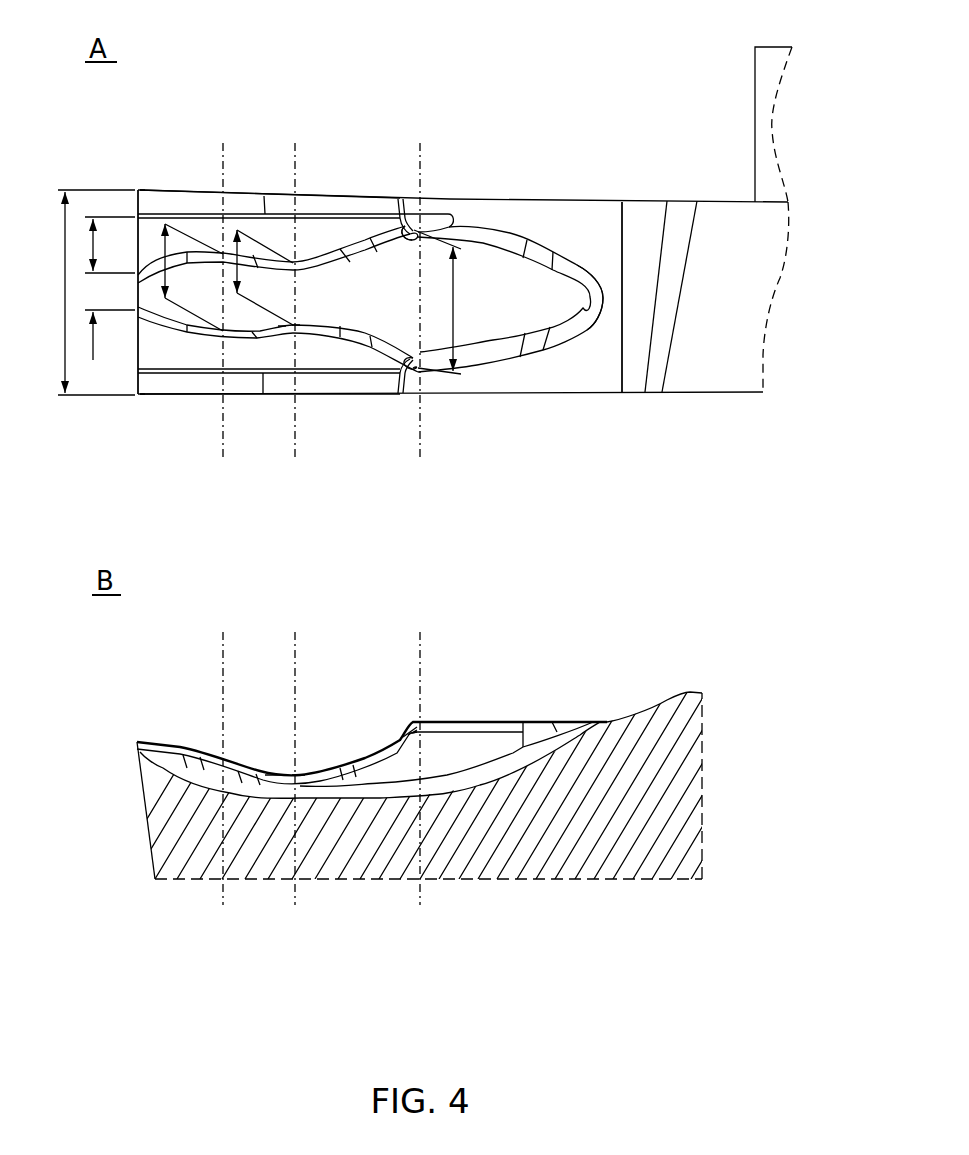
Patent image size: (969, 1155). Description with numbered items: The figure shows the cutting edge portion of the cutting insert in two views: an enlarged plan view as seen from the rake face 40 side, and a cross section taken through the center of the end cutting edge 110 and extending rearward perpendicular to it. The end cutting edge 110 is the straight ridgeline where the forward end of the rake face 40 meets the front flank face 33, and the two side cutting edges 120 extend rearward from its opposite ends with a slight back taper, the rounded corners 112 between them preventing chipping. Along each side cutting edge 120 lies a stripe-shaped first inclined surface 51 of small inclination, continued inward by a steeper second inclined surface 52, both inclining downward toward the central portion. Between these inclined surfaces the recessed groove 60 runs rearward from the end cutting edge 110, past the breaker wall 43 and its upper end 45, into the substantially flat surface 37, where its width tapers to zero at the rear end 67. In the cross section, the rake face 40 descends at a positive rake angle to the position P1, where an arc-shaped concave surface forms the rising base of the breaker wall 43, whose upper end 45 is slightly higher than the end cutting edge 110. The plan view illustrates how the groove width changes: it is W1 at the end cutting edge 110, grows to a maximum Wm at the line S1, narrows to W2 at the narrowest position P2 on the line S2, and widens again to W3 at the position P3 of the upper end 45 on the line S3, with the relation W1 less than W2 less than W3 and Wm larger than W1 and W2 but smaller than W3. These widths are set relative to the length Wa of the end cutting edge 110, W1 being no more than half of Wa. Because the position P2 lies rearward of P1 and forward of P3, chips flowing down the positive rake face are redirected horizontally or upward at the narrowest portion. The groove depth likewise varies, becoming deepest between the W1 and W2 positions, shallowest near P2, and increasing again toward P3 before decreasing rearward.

The front flank face 33 is at (148, 830).
The flat surface 37 is at (533, 219).
The rake face 40 is at (186, 745).
The breaker wall 43 is at (400, 741).
The upper end of the breaker wall 45 is at (411, 241).
The first inclined surface 51 is at (262, 207).
The second inclined surface 52 is at (350, 235).
The recessed groove 60 is at (139, 750).
The rear end of the recessed groove 67 is at (590, 290).
The end cutting edge 110 is at (140, 359).
The corners 112 is at (139, 190).
The side cutting edges 120 is at (193, 190).
The positive rake angle rear end position P1 is at (282, 332).
The position of the narrowest portion P2 is at (298, 323).
The position of the upper end of the breaker wall P3 is at (452, 214).
The line S1- S1 is at (222, 300).
The line S2- S2 is at (295, 300).
The line S3- S3 is at (420, 300).
The length of the end cutting edge Wa is at (82, 292).
The maximum groove width Wm is at (138, 252).
The groove width at the end cutting edge W1 is at (104, 320).
The groove width at the narrowest portion W2 is at (237, 268).
The groove width at the breaker wall upper end W3 is at (451, 302).